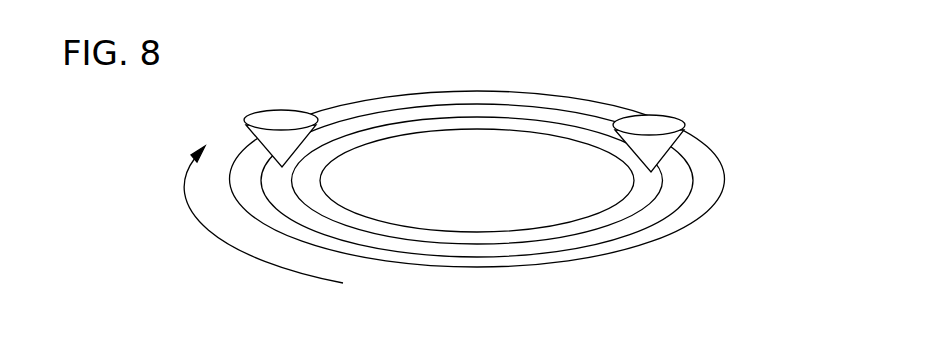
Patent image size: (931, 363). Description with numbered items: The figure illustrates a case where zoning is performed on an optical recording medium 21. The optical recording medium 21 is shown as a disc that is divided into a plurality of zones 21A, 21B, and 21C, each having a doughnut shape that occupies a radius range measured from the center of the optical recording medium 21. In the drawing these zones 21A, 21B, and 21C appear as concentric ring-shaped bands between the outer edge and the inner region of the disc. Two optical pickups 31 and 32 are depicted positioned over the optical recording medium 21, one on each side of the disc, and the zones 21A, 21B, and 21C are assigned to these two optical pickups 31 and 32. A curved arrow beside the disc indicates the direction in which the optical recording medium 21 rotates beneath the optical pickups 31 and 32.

The optical recording medium 21 is at (477, 224).
The zone 21A is at (632, 242).
The zone 21B is at (590, 238).
The zone 21C is at (477, 222).
The optical pickup 31 is at (663, 122).
The optical pickup 32 is at (280, 115).